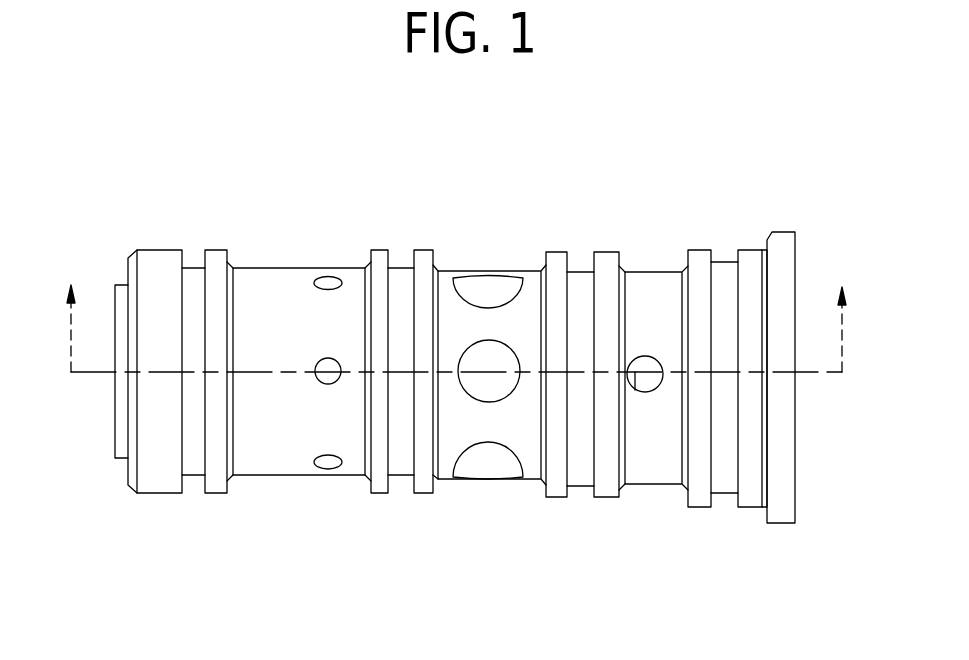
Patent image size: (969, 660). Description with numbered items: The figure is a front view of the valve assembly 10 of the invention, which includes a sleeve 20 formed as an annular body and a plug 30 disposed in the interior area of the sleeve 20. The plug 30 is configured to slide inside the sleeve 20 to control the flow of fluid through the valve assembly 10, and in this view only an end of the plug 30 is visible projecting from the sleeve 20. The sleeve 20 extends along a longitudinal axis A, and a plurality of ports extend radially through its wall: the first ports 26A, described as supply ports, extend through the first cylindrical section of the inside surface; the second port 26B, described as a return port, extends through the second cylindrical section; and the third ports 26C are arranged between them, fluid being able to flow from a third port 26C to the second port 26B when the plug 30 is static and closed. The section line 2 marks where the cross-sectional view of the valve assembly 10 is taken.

The valve assembly 10 is at (681, 160).
The sleeve 20 is at (265, 295).
The plug 30 is at (115, 425).
The first port 26A is at (328, 279).
The second port 26B is at (648, 386).
The third port 26C is at (493, 290).
The longitudinal axis A is at (813, 373).
The section line for FIG. 2 is at (457, 317).